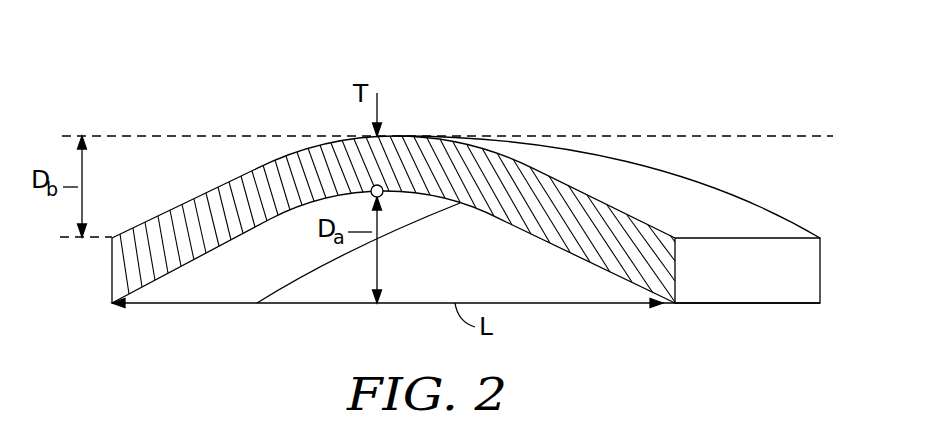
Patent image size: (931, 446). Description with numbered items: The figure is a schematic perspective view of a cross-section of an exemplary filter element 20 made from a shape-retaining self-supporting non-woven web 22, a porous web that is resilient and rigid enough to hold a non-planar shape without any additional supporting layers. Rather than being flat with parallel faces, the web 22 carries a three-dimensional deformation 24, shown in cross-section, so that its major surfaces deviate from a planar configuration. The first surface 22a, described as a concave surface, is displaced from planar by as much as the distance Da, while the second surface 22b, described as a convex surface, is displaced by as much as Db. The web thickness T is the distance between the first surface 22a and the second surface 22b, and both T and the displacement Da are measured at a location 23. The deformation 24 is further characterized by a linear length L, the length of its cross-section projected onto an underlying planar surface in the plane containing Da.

The filter element 20 is at (645, 108).
The shape-retaining self-supporting non-woven web 22 is at (657, 242).
The first surface 22a is at (393, 277).
The second surface 22b is at (212, 330).
The location 23 is at (381, 186).
The three-dimensional deformation 24 is at (482, 130).